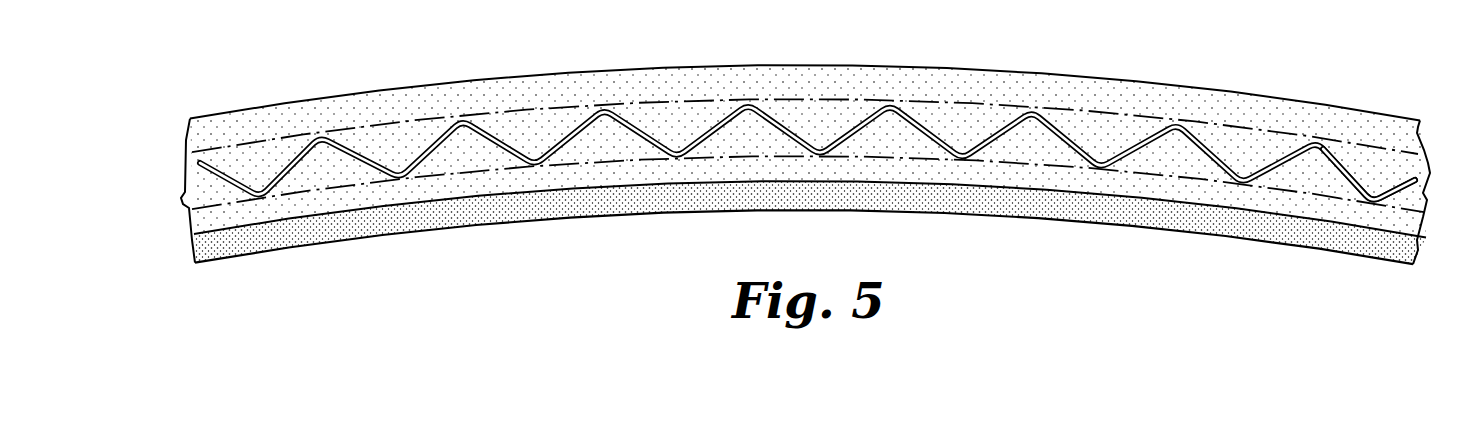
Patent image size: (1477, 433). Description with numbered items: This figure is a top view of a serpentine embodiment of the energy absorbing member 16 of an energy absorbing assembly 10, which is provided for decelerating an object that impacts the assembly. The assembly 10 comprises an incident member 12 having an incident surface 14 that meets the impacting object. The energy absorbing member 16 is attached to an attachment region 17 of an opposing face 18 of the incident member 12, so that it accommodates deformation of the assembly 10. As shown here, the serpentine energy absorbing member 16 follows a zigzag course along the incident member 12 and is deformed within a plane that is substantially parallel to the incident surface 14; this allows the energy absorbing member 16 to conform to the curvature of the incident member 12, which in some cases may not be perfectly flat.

The energy absorbing assembly 10 is at (312, 80).
The incident member 12 is at (184, 156).
The incident surface 14 is at (343, 242).
The energy absorbing member 16 is at (605, 108).
The attachment region 17 is at (1387, 168).
The opposing face 18 is at (1153, 108).